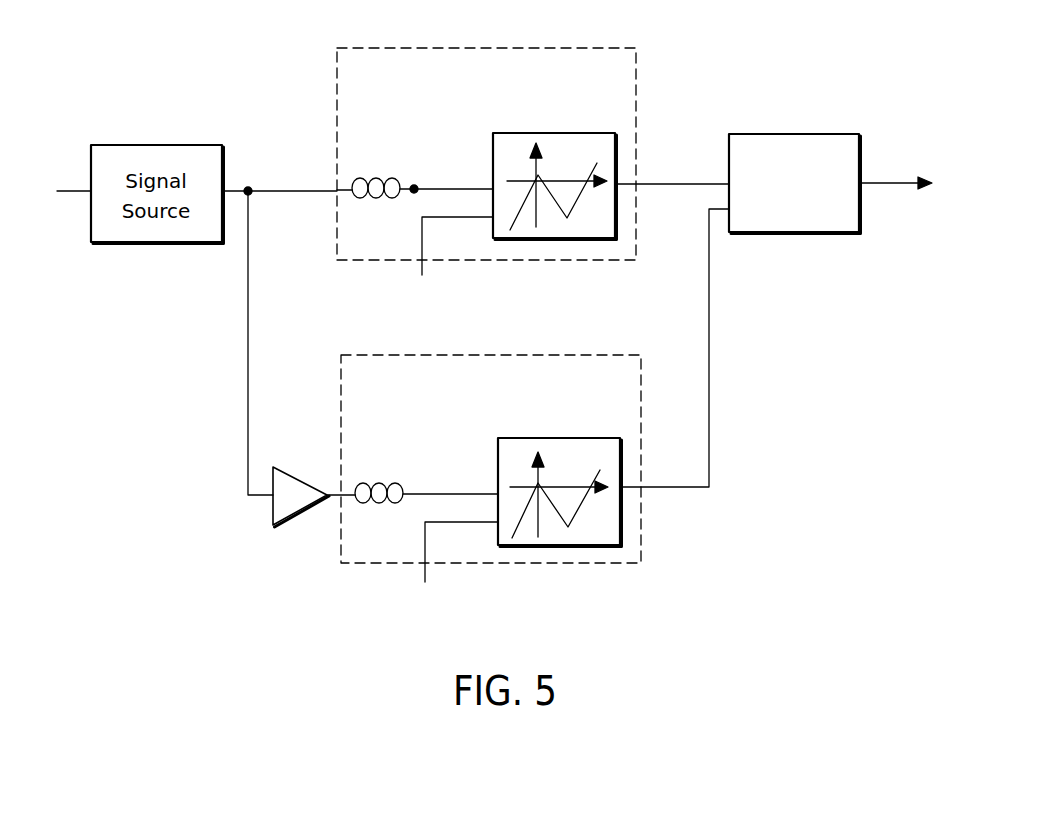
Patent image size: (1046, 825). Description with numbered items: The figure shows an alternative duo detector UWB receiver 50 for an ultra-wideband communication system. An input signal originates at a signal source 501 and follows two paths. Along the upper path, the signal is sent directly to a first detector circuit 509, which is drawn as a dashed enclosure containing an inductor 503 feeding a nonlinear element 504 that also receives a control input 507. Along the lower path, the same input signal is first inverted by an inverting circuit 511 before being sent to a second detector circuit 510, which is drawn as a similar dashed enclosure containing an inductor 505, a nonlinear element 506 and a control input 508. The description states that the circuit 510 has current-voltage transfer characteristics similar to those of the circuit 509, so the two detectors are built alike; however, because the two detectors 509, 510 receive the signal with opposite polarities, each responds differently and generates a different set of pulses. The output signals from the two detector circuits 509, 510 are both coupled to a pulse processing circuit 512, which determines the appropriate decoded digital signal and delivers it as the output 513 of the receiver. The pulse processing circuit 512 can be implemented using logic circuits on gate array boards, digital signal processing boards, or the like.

The duo detector UWB receiver 50 is at (772, 542).
The signal source 501 is at (77, 190).
The inductor L 503 is at (397, 179).
The nonlinear transmission line / pulse shaping element 504 is at (548, 133).
The inductor 505 is at (398, 483).
The nonlinear transmission line / pulse shaping element 506 is at (577, 438).
The control input 507 is at (449, 262).
The control input 508 is at (453, 567).
The circuit 509 is at (602, 262).
The circuit 510 is at (603, 565).
The inverting circuit 511 is at (300, 481).
The pulse processing circuit 512 is at (792, 134).
The output signal 513 is at (887, 182).